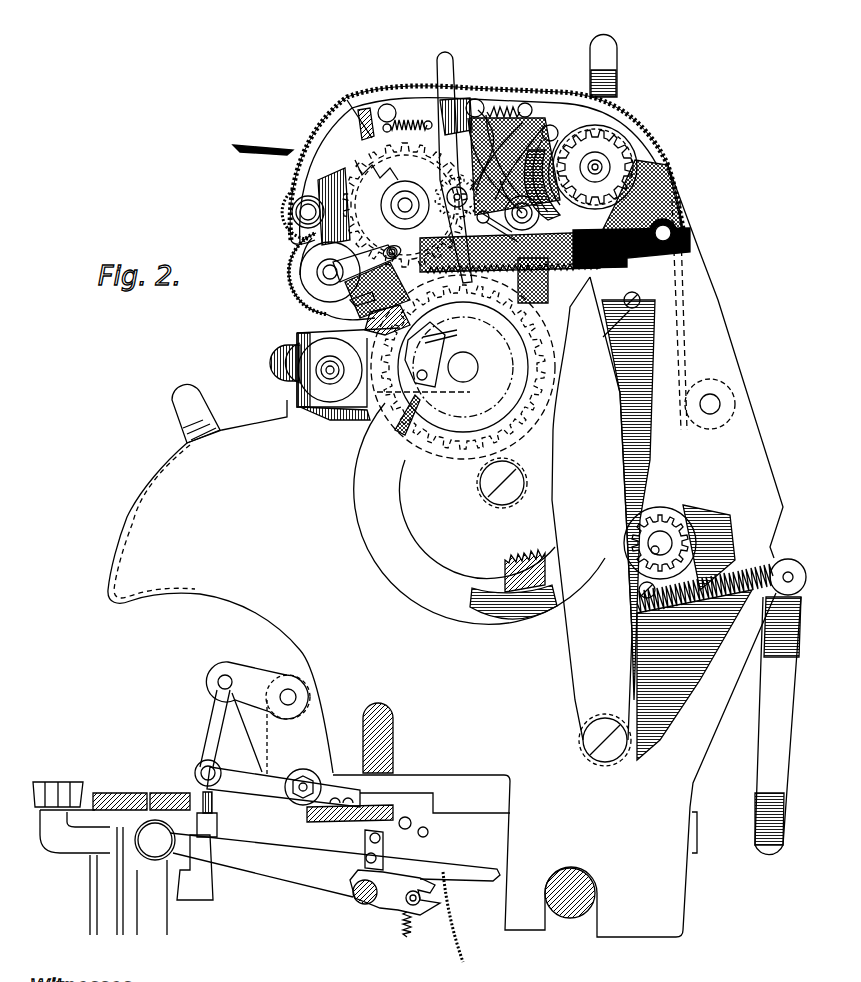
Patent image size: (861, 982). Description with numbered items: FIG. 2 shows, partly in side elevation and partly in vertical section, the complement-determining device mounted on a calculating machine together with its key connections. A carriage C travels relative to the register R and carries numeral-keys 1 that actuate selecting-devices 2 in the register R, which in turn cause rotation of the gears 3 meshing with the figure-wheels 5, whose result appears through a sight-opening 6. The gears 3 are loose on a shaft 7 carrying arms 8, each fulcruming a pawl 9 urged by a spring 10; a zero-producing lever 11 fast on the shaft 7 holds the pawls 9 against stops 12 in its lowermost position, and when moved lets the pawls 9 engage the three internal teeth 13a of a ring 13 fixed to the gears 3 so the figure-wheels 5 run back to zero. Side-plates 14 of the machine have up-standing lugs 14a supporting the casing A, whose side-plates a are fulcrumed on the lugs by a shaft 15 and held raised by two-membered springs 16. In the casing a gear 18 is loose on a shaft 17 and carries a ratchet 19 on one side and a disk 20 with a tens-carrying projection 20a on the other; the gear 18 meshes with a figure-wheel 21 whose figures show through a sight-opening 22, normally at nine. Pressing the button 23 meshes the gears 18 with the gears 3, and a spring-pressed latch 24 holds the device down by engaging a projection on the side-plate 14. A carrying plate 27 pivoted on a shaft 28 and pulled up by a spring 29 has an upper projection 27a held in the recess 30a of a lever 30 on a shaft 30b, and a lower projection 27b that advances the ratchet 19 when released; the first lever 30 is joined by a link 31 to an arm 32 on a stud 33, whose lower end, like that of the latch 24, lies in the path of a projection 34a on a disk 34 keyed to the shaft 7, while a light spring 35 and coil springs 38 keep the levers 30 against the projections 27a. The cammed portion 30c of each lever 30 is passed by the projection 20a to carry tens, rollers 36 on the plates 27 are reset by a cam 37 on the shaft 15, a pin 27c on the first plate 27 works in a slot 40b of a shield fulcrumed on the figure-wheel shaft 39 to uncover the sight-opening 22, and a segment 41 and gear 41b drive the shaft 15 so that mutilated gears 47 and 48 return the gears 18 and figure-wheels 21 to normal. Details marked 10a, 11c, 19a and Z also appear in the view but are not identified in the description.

The numeral-keys 1 is at (204, 402).
The selecting-devices 2 is at (421, 758).
The gears 3 is at (503, 303).
The figure-wheels 5 is at (330, 370).
The sight-opening 6 is at (290, 343).
The shaft 7 is at (463, 367).
The arms 8 is at (450, 390).
The pawl 9 is at (387, 327).
The spring 10 is at (317, 275).
The roller lobe 10a is at (290, 265).
The zero-producing lever 11 is at (262, 363).
The disc 11c is at (410, 557).
The stops 12 is at (357, 417).
The ring 13 is at (370, 292).
The internal teeth 13a is at (347, 326).
The side-plates 14 is at (697, 298).
The up-standing lugs 14a is at (665, 233).
The shaft 15 is at (600, 165).
The two-membered springs 16 is at (675, 278).
The shaft 17 is at (407, 203).
The gear 18 is at (308, 203).
The ratchet 19 is at (618, 50).
The housing wall 19a is at (290, 232).
The disk 20 is at (470, 258).
The tens-carrying projection 20a is at (384, 174).
The figure-wheel 21 is at (287, 290).
The sight-opening 22 is at (373, 255).
The button 23 is at (233, 145).
The spring-pressed latch 24 is at (441, 87).
The carrying plate 27 is at (514, 186).
The upper projection 27a is at (367, 130).
The lower projection 27b is at (296, 212).
The pin 27c is at (389, 250).
The shaft 28 is at (519, 215).
The spring 29 is at (533, 117).
The lever 30 is at (320, 157).
The recess 30a is at (357, 140).
The shaft 30b is at (293, 203).
The cammed portion 30c is at (360, 153).
The link 31 is at (468, 106).
The arm 32 is at (497, 110).
The stud 33 is at (475, 200).
The disk 34 is at (458, 330).
The projection 34a is at (410, 425).
The light spring 35 is at (413, 118).
The rollers 36 is at (553, 132).
The cam 37 is at (610, 130).
The light coil springs 38 is at (515, 110).
The figure-wheel supporting shaft 39 is at (283, 307).
The slot 40b is at (343, 290).
The segment 41 is at (654, 521).
The gear 41b is at (532, 572).
The mutilated gear 47 is at (640, 168).
The mutilated gears 48 is at (545, 251).
The casing A is at (637, 140).
The side-plates a is at (650, 147).
The carriage C is at (317, 878).
The register R is at (760, 707).
The nut Z is at (55, 784).